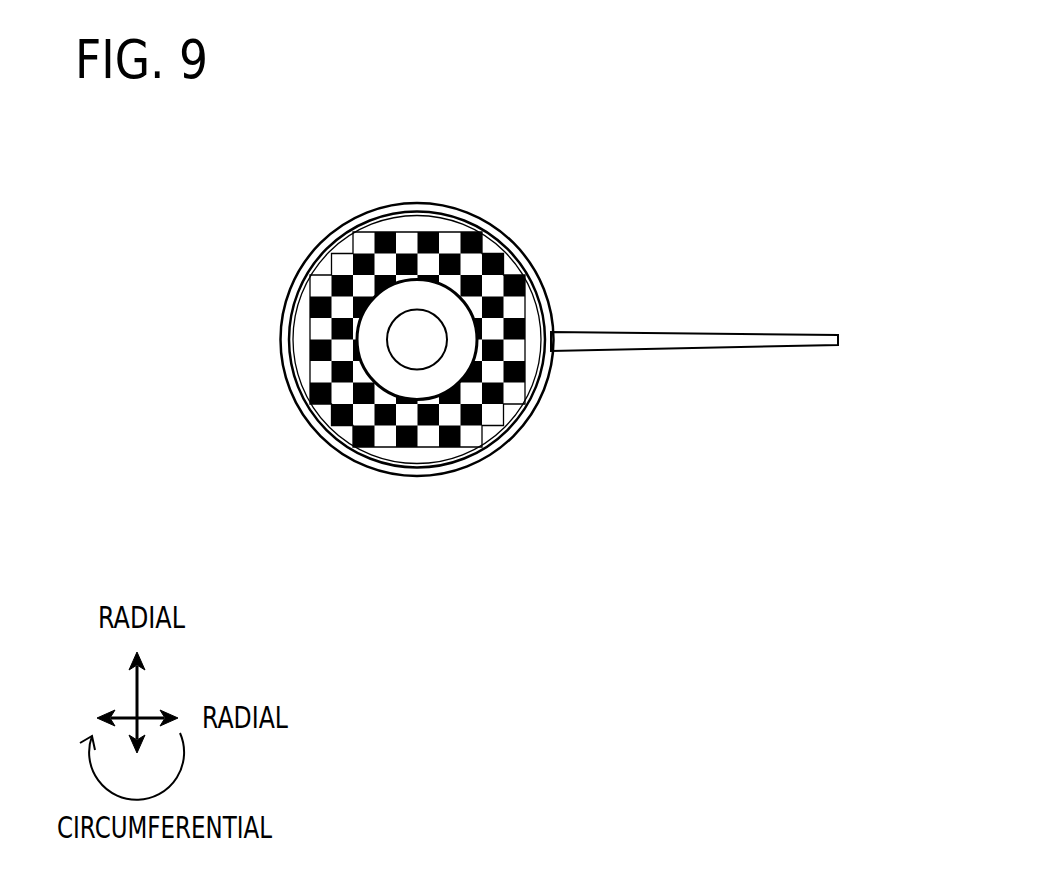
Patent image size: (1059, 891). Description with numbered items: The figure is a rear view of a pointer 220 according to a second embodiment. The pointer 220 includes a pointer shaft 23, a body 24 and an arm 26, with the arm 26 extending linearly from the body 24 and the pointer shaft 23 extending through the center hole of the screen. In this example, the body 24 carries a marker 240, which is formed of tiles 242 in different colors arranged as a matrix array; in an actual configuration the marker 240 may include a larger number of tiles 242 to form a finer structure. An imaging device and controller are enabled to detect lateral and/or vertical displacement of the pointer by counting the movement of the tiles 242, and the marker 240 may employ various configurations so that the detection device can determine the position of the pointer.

The pointer 220 is at (843, 156).
The body 24 is at (375, 212).
The marker 240 is at (312, 238).
The tiles 242 is at (310, 285).
The pointer shaft 23 is at (462, 375).
The arm 26 is at (617, 332).